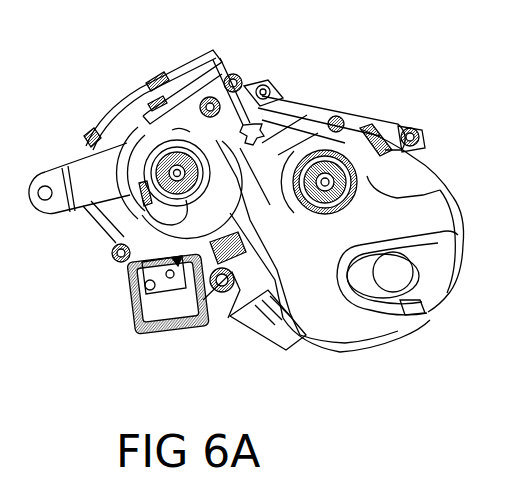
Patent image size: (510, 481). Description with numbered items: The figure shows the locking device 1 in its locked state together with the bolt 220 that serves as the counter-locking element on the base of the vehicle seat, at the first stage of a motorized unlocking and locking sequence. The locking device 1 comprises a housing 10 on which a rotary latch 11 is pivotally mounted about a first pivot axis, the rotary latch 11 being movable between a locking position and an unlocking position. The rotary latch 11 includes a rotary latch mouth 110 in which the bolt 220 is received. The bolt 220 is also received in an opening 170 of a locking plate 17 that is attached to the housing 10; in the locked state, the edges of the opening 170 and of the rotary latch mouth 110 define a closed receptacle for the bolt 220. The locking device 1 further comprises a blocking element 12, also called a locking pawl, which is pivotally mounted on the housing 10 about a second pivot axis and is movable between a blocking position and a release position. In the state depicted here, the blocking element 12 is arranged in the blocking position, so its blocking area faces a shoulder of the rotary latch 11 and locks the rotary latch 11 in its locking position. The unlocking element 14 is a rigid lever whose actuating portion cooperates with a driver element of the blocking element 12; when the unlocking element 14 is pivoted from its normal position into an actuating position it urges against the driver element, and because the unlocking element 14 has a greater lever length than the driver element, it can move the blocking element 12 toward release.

The locking device 1 is at (113, 88).
The housing 10 is at (283, 117).
The rotary latch 11 is at (355, 323).
The blocking element 12 is at (160, 235).
The unlocking element 14 is at (82, 178).
The locking plate 17 is at (268, 307).
The rotary latch mouth 110 is at (352, 296).
The opening 170 is at (426, 282).
The bolt 220 is at (393, 277).